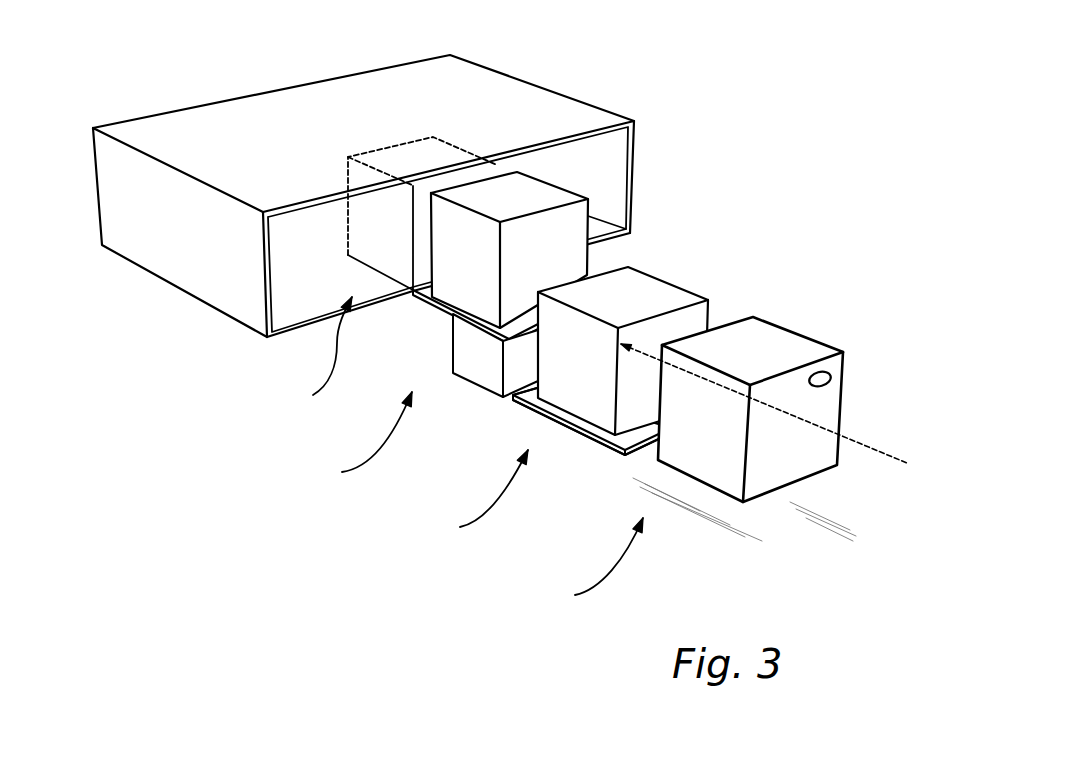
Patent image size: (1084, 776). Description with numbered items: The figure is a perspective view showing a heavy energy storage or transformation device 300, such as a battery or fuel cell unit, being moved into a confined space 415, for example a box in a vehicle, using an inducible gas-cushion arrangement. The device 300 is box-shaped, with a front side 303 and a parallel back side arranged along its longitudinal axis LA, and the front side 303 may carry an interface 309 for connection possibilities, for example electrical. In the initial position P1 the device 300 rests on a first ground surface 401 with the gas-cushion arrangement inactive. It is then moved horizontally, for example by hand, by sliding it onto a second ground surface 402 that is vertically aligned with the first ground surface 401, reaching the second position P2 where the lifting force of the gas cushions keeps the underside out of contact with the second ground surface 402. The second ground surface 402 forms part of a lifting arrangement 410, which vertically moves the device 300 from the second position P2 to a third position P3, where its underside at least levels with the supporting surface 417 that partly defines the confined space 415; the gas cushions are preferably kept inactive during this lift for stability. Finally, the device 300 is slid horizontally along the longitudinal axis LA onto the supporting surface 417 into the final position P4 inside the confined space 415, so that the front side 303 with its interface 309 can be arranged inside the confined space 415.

The confined space 415 is at (352, 110).
The supporting surface 417 is at (340, 283).
The energy storage or transformation device 300 is at (612, 343).
The second ground surface 402 is at (501, 429).
The lifting arrangement 410 is at (480, 373).
The first ground surface 401 is at (720, 503).
The front side 303 is at (772, 464).
The interface 309 is at (823, 375).
The longitudinal axis LA is at (857, 447).
The initial position P1 is at (589, 568).
The second position P2 is at (474, 500).
The third position P3 is at (357, 444).
The final position P4 is at (313, 360).